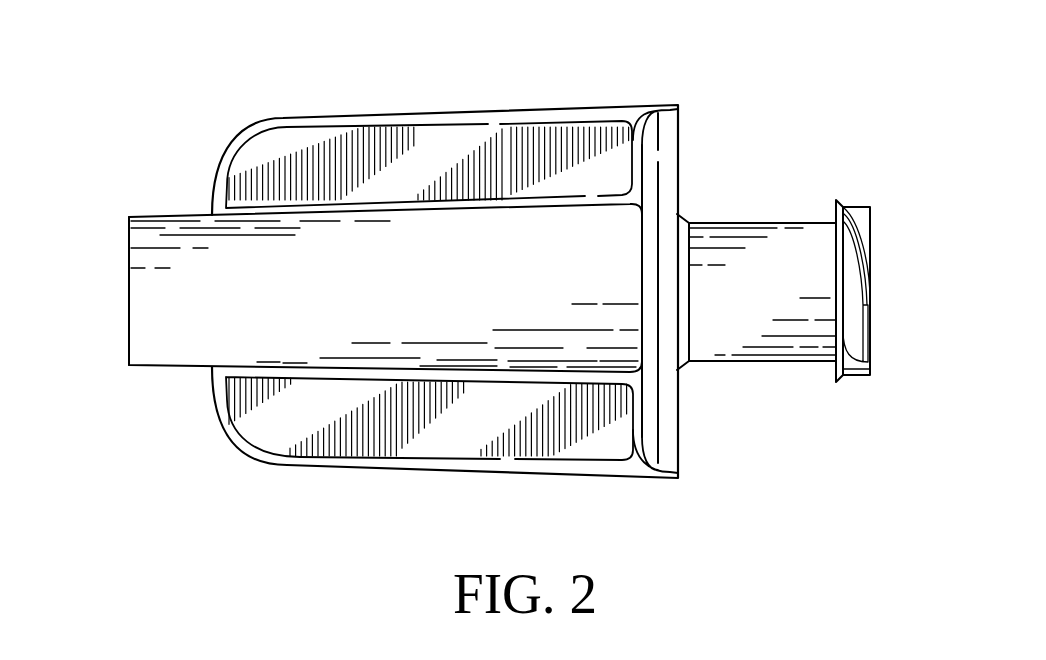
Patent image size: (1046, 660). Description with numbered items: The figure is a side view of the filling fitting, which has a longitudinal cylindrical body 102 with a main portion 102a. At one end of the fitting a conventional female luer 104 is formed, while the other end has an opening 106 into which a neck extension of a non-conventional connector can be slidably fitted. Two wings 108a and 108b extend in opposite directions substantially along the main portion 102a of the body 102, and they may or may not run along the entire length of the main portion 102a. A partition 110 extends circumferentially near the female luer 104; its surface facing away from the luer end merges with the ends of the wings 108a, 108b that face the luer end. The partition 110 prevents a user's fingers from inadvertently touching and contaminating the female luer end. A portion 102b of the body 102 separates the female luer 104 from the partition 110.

The longitudinal cylindrical body 102 is at (186, 322).
The main portion 102a is at (453, 310).
The portion of body 102b is at (738, 222).
The female luer 104 is at (875, 198).
The opening 106 is at (128, 243).
The wing 108a is at (442, 145).
The wing 108b is at (447, 430).
The partition 110 is at (672, 433).